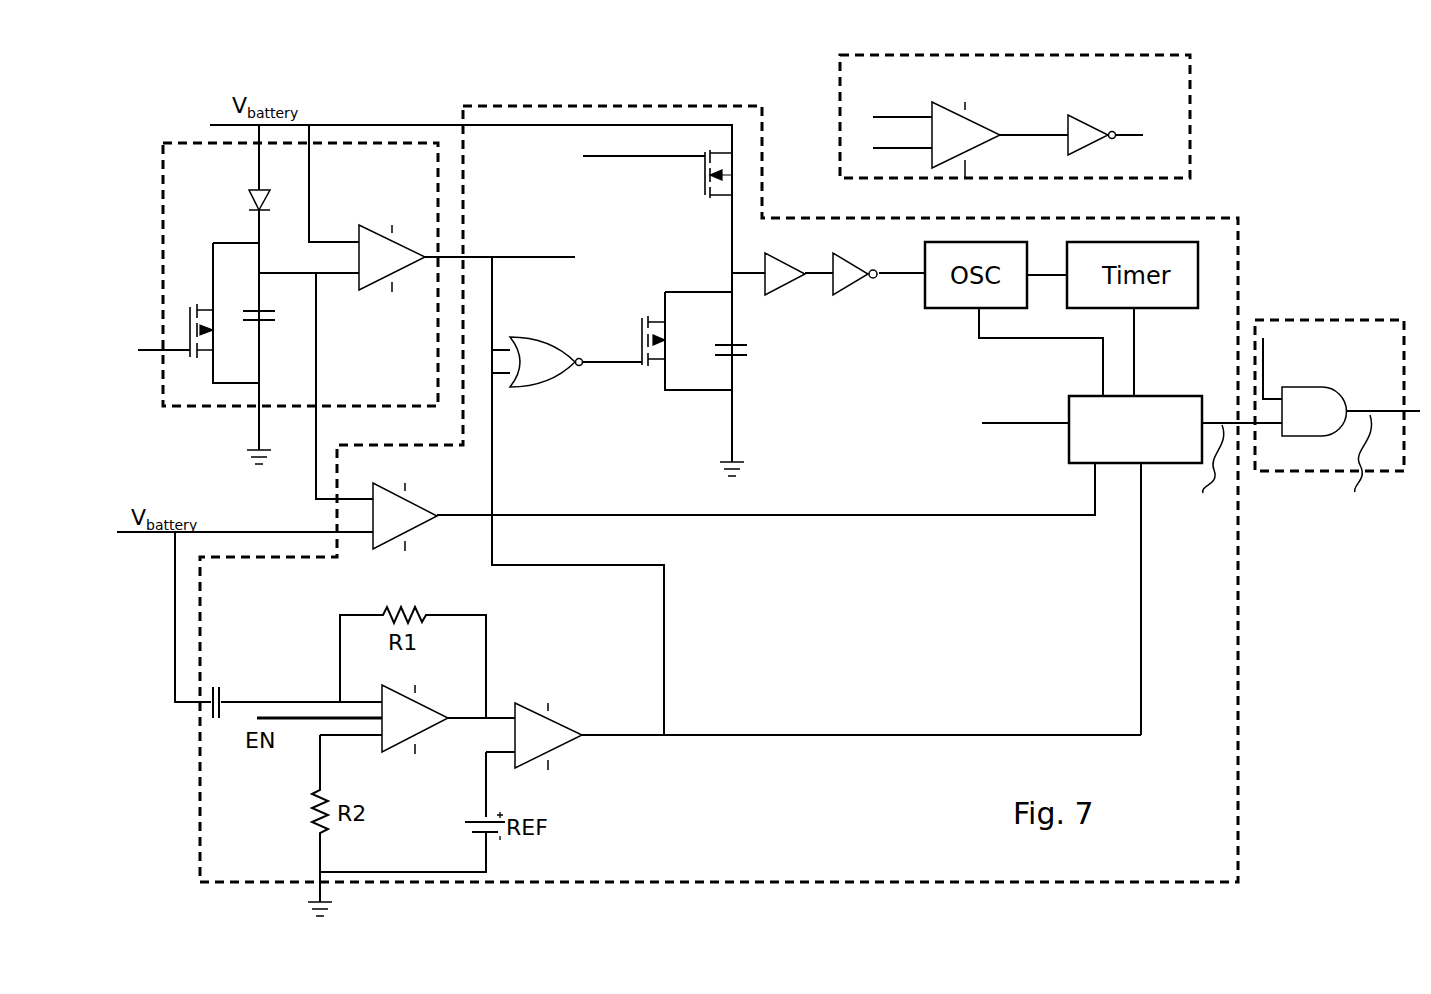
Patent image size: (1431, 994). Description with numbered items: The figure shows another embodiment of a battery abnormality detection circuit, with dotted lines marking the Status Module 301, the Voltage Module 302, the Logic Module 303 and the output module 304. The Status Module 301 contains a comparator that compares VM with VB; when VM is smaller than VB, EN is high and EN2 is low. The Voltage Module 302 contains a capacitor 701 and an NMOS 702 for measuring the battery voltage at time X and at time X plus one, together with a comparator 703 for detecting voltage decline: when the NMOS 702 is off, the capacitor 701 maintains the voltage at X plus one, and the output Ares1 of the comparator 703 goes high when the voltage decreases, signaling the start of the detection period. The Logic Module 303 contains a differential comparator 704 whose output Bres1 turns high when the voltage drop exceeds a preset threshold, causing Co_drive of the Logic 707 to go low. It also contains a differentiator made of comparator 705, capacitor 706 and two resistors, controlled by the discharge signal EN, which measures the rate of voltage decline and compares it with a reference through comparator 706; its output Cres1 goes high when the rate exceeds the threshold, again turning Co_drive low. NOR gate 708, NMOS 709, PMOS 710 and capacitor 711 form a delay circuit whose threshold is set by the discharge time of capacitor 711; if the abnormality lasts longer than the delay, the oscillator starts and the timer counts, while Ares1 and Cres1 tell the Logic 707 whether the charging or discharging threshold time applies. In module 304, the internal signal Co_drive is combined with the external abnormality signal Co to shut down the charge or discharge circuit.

The status module 301 is at (1190, 100).
The voltage module 302 is at (190, 143).
The logic module 303 is at (1238, 718).
The output module 304 is at (1313, 318).
The capacitor 701 is at (280, 319).
The NMOS 702 is at (197, 303).
The comparator 703 is at (467, 258).
The differential comparator 704 is at (734, 507).
The comparator 705 is at (415, 719).
The capacitor / comparator 706 is at (671, 716).
The logic 707 is at (1110, 565).
The NOR gate 708 is at (576, 362).
The NMOS 709 is at (666, 348).
The PMOS 710 is at (657, 306).
The capacitor 711 is at (757, 353).